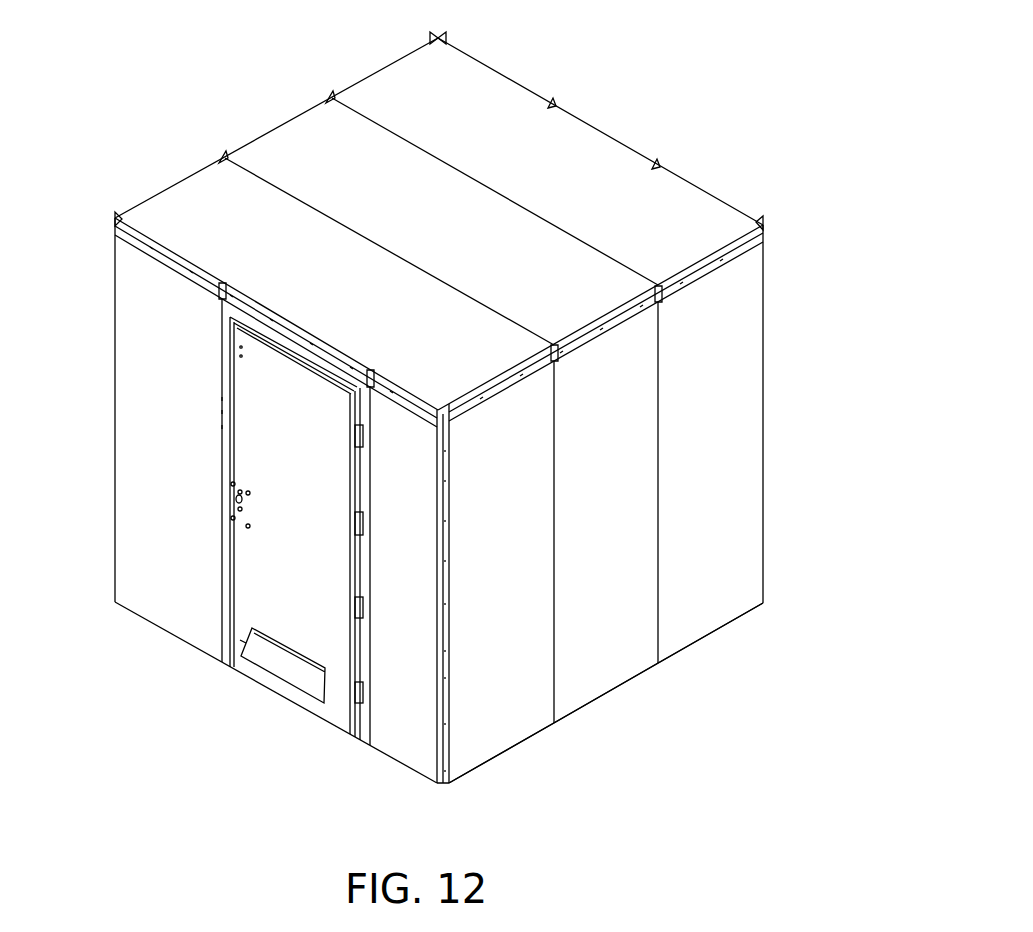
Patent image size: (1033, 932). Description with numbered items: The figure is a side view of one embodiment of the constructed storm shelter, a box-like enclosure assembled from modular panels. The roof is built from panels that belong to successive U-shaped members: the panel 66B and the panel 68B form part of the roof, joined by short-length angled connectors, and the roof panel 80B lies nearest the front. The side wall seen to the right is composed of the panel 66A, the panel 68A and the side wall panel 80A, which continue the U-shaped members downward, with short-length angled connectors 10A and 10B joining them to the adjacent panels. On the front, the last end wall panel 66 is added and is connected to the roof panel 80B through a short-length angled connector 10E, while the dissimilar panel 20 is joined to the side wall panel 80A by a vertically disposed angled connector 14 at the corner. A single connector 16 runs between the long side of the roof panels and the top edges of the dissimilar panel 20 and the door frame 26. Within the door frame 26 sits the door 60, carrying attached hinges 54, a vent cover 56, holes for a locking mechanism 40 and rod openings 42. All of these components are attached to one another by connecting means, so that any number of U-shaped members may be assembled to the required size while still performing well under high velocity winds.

The short-length angled connector 10A is at (690, 268).
The short-length angled connector 10B is at (602, 332).
The short-length angled connector 10E is at (113, 226).
The vertically disposed angled connector 14 is at (443, 750).
The single connector 16 is at (273, 313).
The dissimilar panel 20 is at (400, 767).
The door frame 26 is at (350, 727).
The locking mechanism 40 is at (236, 498).
The rod openings 42 is at (243, 642).
The hinges 54 is at (348, 693).
The vent cover 56 is at (278, 672).
The door 60 is at (243, 447).
The end wall panel 66 is at (133, 424).
The panel 66A is at (707, 613).
The panel 66B is at (393, 80).
The panel 68A is at (604, 678).
The panel 68B is at (302, 137).
The side wall panel 80A is at (502, 723).
The roof panel 80B is at (163, 205).